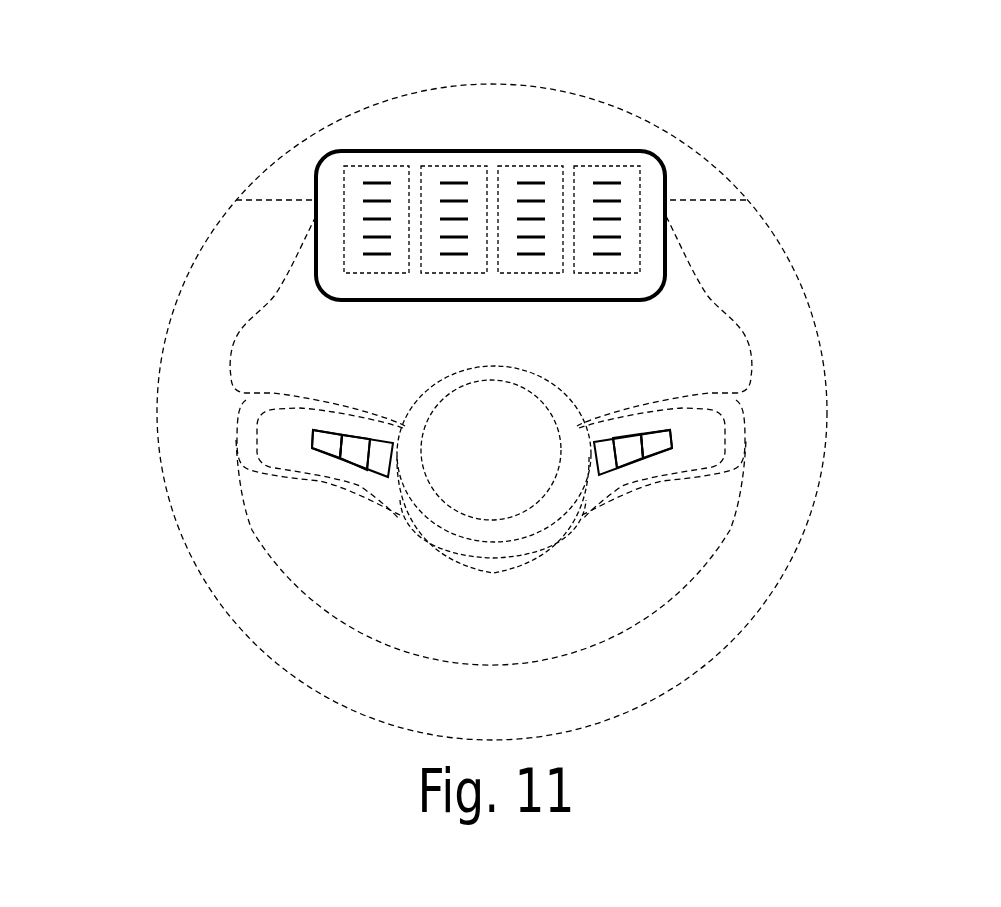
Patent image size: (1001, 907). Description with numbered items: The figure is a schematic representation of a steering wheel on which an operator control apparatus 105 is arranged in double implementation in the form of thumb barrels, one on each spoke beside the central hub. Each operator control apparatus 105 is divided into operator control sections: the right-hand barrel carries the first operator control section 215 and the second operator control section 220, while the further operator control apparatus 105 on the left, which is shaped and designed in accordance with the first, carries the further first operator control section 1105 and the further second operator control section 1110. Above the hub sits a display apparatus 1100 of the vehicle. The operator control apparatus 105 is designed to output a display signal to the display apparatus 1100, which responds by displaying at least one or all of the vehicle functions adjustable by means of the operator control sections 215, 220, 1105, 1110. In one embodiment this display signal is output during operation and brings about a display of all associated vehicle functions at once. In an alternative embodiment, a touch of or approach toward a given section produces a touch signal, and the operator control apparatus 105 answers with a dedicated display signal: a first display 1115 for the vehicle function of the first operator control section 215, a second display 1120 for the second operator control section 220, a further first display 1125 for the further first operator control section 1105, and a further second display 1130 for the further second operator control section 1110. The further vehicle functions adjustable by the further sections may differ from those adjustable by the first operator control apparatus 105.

The operator control apparatus 105 is at (302, 436).
The first operator control section 215 is at (628, 453).
The second operator control section 220 is at (660, 445).
The display apparatus 1100 is at (668, 252).
The further first operator control section 1105 is at (357, 455).
The further second operator control section 1110 is at (328, 447).
The first display 1115 is at (530, 165).
The second display 1120 is at (625, 165).
The further first display 1125 is at (455, 165).
The further second display 1130 is at (372, 165).